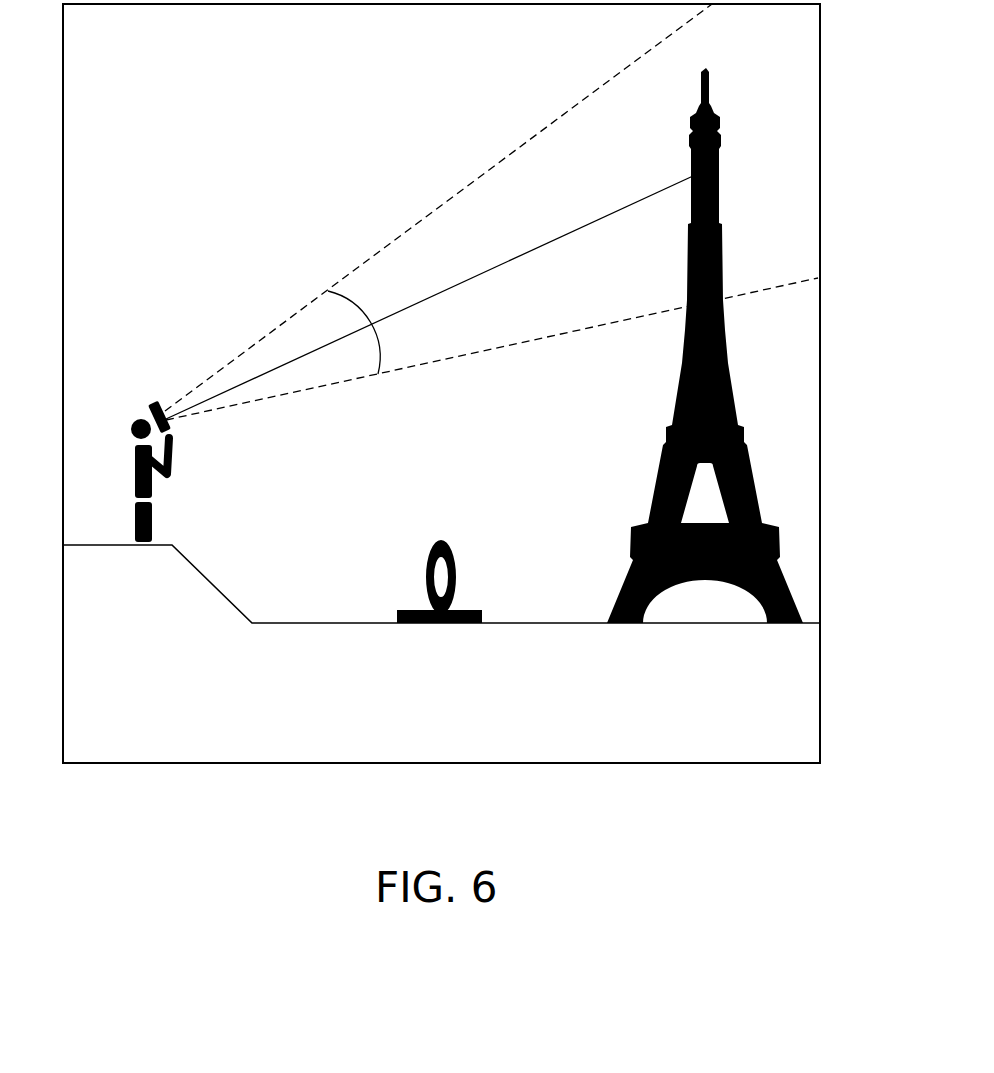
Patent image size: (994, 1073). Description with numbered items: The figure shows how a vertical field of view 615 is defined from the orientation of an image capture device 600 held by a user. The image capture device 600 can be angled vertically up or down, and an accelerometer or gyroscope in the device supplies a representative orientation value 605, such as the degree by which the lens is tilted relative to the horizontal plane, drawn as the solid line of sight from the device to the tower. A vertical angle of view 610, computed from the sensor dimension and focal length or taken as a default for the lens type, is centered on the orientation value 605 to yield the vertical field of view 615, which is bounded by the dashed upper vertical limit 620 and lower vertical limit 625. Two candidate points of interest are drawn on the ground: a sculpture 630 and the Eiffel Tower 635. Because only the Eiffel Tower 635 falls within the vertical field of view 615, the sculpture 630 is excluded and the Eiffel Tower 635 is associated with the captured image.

The image capture device 600 is at (155, 409).
The representative orientation value 605 is at (512, 265).
The vertical angle of view 610 is at (359, 311).
The vertical field of view 615 is at (705, 333).
The upper vertical limit 620 is at (442, 208).
The lower vertical limit 625 is at (442, 360).
The sculpture 630 is at (448, 543).
The Eiffel Tower 635 is at (740, 430).